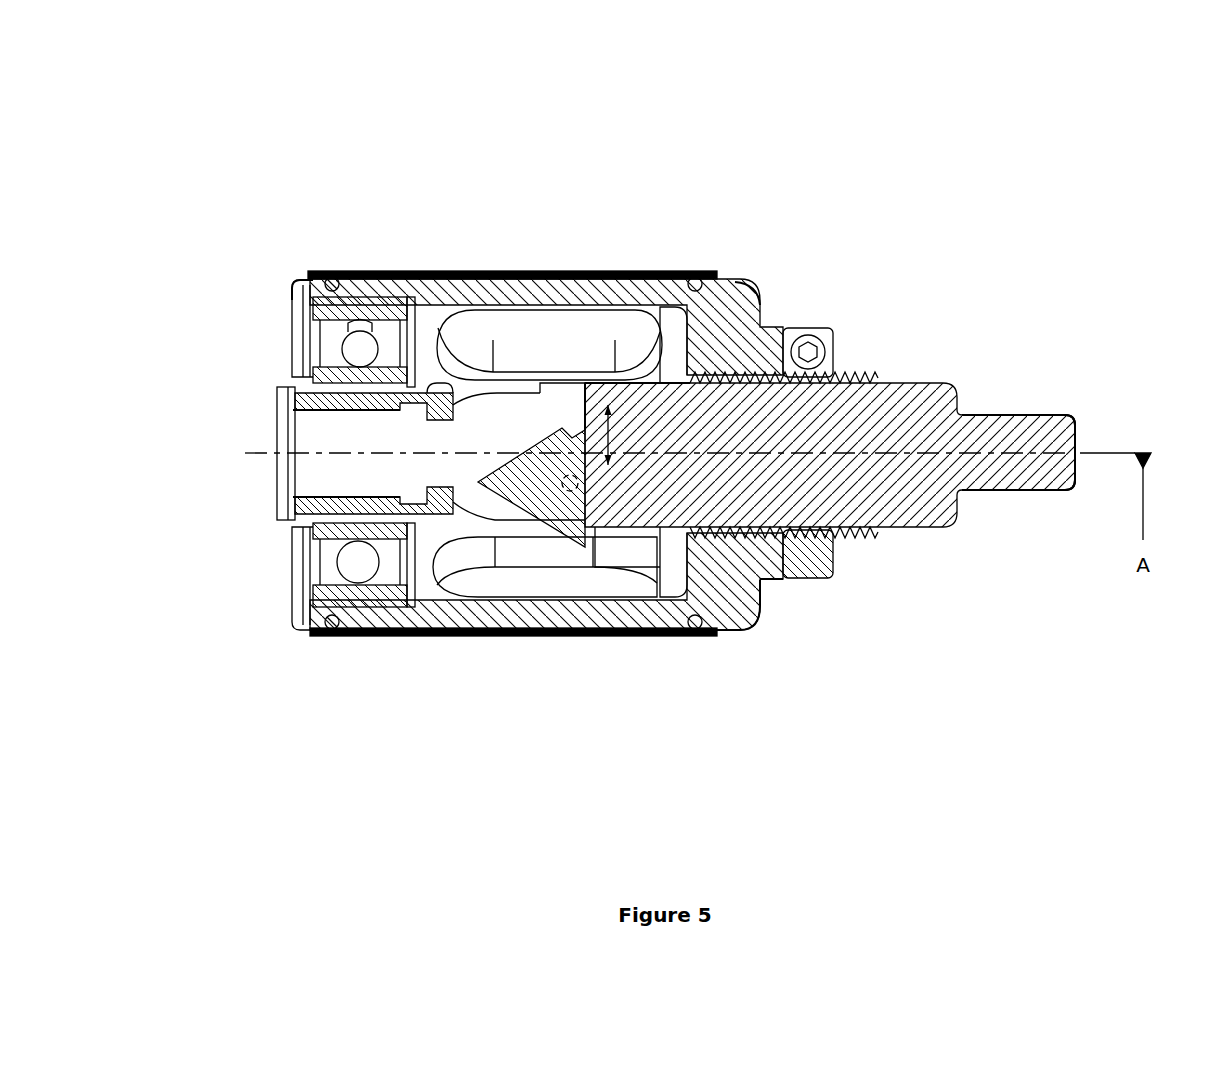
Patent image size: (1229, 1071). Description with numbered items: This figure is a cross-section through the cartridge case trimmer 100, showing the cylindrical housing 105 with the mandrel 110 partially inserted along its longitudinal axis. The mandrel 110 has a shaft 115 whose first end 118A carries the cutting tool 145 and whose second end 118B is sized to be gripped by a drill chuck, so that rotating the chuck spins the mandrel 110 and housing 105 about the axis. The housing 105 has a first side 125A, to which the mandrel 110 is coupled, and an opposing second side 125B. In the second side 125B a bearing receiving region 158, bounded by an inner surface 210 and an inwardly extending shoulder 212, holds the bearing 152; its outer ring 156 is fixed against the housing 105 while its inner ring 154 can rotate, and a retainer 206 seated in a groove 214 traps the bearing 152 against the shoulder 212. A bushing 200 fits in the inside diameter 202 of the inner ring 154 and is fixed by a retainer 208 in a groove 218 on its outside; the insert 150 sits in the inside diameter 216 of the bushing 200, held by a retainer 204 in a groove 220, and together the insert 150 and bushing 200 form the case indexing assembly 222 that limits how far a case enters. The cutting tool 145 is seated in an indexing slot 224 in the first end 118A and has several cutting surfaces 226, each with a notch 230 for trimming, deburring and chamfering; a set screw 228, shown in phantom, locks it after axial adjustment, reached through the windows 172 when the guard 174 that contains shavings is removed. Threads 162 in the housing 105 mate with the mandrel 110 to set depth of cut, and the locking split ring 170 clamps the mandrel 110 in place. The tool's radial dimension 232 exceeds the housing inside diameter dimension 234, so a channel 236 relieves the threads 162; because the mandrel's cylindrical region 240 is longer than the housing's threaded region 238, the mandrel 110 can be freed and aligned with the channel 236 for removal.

The cartridge case trimmer 100 is at (711, 130).
The housing 105 is at (740, 293).
The mandrel 110 is at (915, 372).
The shaft 115 is at (1060, 413).
The first end 118A is at (617, 376).
The second end 118B is at (1083, 430).
The first side 125A is at (762, 300).
The second side 125B is at (288, 277).
The cutting tool 145 is at (582, 545).
The insert 150 is at (279, 390).
The bearing 152 is at (372, 300).
The inner ring 154 is at (373, 541).
The outer ring 156 is at (353, 598).
The bearing receiving region 158 is at (333, 278).
The threads 162 is at (758, 362).
The locking split ring 170 is at (836, 325).
The windows 172 is at (522, 325).
The guard 174 is at (683, 272).
The bushing 200 is at (482, 491).
The inside diameter 202 is at (290, 388).
The retainer 204 is at (290, 398).
The retainer 206 is at (292, 300).
The retainer 208 is at (408, 370).
The inner surface 210 is at (300, 626).
The shoulder 212 is at (428, 300).
The groove 214 is at (307, 284).
The inside diameter 216 is at (290, 397).
The groove 218 is at (432, 527).
The groove 220 is at (278, 522).
The case indexing assembly 222 is at (436, 365).
The indexing slot 224 is at (584, 423).
The cutting surfaces 226 is at (568, 425).
The set screw 228 is at (668, 613).
The notch 230 is at (588, 380).
The dimension 232 is at (975, 547).
The dimension 234 is at (1003, 533).
The channel 236 is at (760, 594).
The threaded region 238 is at (695, 530).
The cylindrical region 240 is at (590, 483).